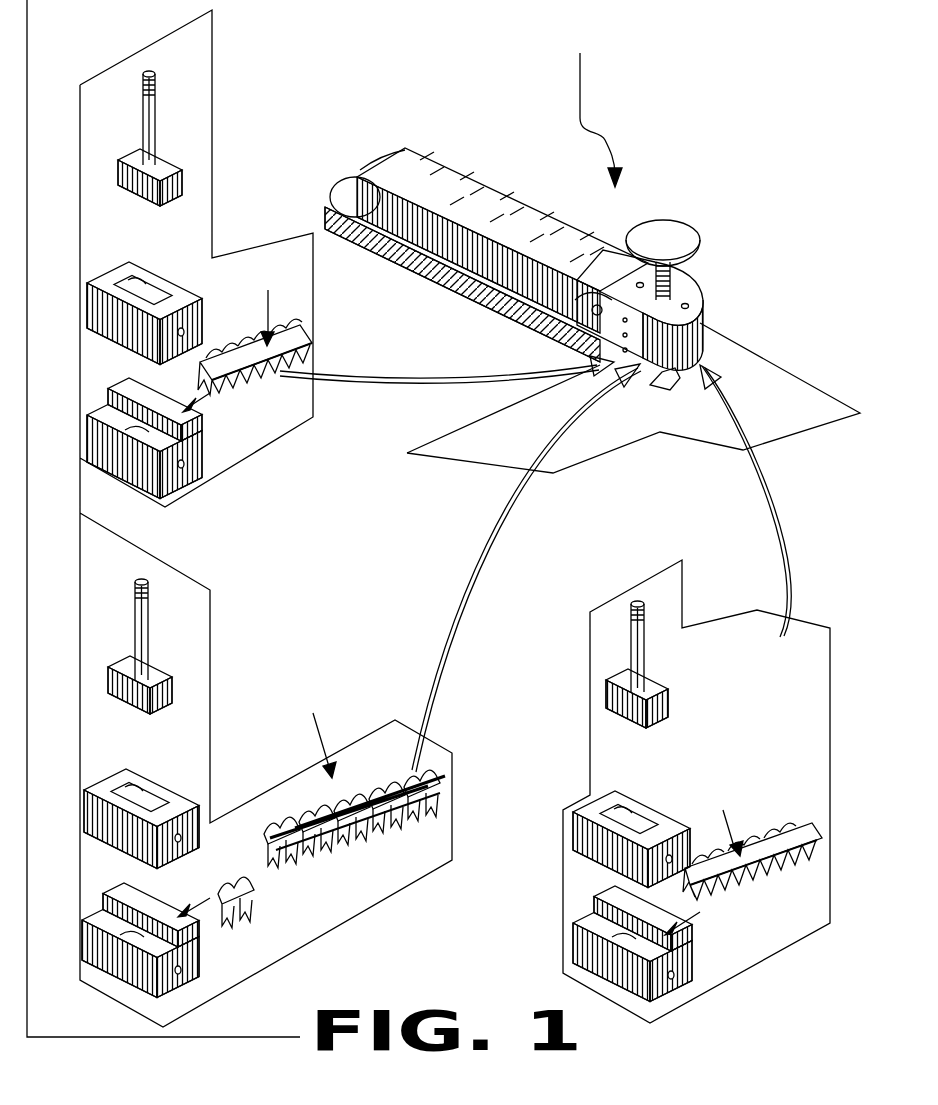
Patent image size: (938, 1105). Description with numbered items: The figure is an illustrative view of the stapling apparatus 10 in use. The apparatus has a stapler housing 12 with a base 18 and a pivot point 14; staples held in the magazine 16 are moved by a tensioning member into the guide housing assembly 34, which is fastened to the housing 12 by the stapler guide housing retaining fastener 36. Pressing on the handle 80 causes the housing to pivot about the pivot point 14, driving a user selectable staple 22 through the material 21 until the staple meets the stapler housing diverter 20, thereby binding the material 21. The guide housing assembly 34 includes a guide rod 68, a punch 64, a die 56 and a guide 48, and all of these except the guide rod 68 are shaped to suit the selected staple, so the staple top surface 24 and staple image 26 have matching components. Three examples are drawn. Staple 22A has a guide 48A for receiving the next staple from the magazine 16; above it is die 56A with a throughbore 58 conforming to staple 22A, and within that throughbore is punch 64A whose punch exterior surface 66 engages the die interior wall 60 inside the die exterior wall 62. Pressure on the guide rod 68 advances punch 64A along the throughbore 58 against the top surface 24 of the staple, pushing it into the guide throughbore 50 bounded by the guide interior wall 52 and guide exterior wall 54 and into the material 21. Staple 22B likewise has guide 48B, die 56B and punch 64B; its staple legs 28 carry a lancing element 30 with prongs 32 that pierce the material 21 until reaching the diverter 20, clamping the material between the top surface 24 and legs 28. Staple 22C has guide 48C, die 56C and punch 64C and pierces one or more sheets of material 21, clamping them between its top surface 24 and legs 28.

The stapling apparatus 10 is at (593, 99).
The stapler housing 12 is at (443, 157).
The stapler housing pivot point 14 is at (327, 205).
The stapler magazine 16 is at (410, 157).
The stapler housing base 18 is at (447, 280).
The stapler housing diverter 20 is at (650, 383).
The material 21 is at (767, 377).
The user selectable staple 22 is at (668, 390).
The user selectable shaped staple 22A is at (310, 345).
The user selectable shaped staple 22B is at (541, 801).
The user selectable shaped staple 22C is at (802, 850).
The user selectable staple top surface 24 is at (270, 413).
The user selectable staple image 26 is at (375, 767).
The user selectable staple legs 28 is at (382, 830).
The user selectable staple lancing element 30 is at (327, 867).
The user selectable staple prongs 32 is at (263, 905).
The guide housing assembly 34 is at (707, 290).
The stapler guide housing retaining fastener 36 is at (557, 333).
The guide housing guide 48 is at (368, 693).
The guide housing shaped guide 48A is at (200, 432).
The guide housing shaped guide 48B is at (193, 935).
The guide housing shaped guide 48C is at (683, 947).
The guide housing guide throughbore 50 is at (133, 927).
The guide housing guide interior wall 52 is at (128, 397).
The guide housing guide exterior wall 54 is at (440, 693).
The guide housing die 56 is at (358, 550).
The guide housing shaped die 56A is at (185, 290).
The guide housing shaped die 56B is at (180, 800).
The guide housing shaped die 56C is at (673, 820).
The guide housing die throughbore 58 is at (152, 290).
The guide housing die interior wall 60 is at (142, 280).
The guide housing die exterior wall 62 is at (90, 303).
The guide housing punch 64 is at (391, 392).
The guide housing selectable shaped punch 64A is at (163, 170).
The guide housing selectable shaped punch 64B is at (170, 673).
The guide housing selectable shaped punch 64C is at (657, 690).
The guide housing punch exterior surface 66 is at (178, 192).
The guide housing punch rod 68 is at (157, 118).
The guide housing drive handle 80 is at (660, 230).